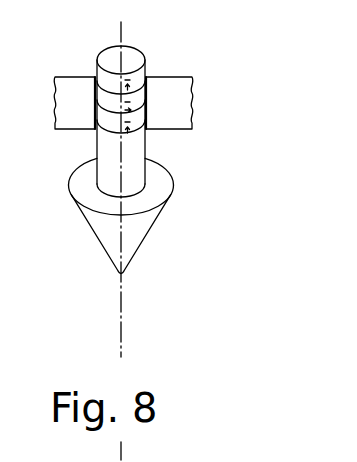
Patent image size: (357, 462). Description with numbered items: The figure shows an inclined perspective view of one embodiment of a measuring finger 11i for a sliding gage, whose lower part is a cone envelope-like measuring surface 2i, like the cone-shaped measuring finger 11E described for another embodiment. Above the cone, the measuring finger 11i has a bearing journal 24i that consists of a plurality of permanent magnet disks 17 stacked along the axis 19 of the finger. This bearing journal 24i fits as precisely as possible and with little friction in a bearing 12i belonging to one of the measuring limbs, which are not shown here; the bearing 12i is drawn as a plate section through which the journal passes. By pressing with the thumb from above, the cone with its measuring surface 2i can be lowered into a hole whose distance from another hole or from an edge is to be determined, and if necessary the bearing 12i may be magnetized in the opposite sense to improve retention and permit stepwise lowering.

The cone envelope-like measuring surface 2i is at (97, 243).
The measuring finger 11i is at (92, 142).
The measuring finger 11E is at (90, 97).
The bearing 12i is at (94, 119).
The bearing journal 24i is at (147, 66).
The permanent magnet disks 17 is at (147, 97).
The axis 19 is at (121, 330).